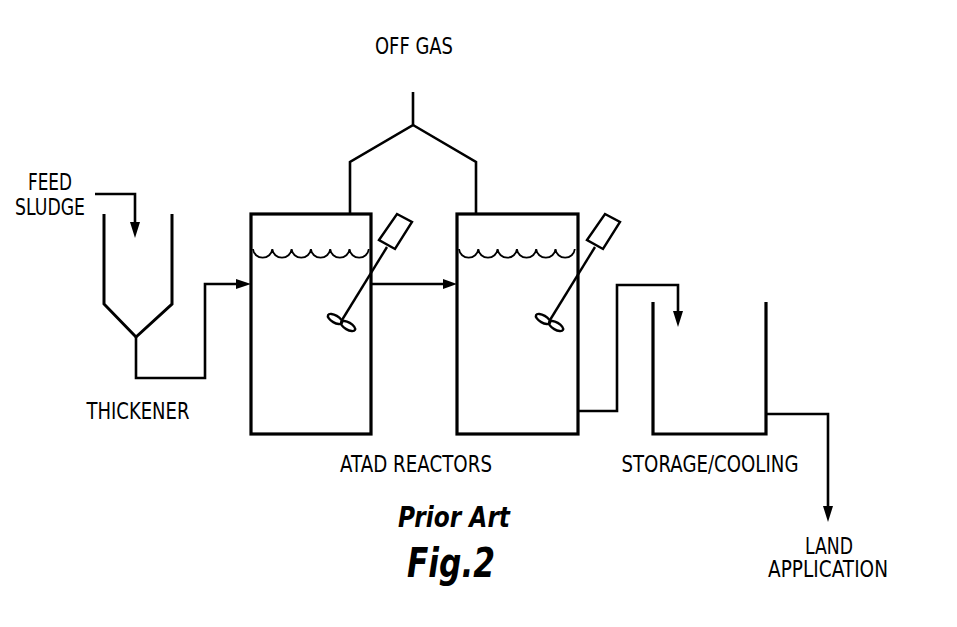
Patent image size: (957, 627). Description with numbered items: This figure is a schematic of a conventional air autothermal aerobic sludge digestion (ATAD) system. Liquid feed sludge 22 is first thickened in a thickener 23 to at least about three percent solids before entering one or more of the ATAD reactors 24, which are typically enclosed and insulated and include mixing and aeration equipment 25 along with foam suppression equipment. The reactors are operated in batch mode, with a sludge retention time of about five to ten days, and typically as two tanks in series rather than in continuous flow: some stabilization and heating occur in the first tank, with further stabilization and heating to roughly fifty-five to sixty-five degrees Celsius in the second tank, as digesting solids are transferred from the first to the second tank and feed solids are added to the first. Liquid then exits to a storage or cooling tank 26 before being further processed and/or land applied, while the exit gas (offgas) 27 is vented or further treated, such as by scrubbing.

The liquid feed sludge 22 is at (117, 202).
The thickener 23 is at (177, 296).
The ATAD reactors 24 is at (467, 324).
The mixing and aeration equipment 25 is at (473, 273).
The storage or cooling tank 26 is at (743, 412).
The exit gas (offgas) 27 is at (413, 136).